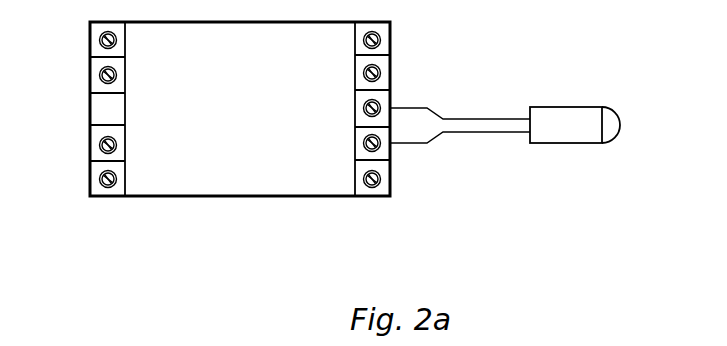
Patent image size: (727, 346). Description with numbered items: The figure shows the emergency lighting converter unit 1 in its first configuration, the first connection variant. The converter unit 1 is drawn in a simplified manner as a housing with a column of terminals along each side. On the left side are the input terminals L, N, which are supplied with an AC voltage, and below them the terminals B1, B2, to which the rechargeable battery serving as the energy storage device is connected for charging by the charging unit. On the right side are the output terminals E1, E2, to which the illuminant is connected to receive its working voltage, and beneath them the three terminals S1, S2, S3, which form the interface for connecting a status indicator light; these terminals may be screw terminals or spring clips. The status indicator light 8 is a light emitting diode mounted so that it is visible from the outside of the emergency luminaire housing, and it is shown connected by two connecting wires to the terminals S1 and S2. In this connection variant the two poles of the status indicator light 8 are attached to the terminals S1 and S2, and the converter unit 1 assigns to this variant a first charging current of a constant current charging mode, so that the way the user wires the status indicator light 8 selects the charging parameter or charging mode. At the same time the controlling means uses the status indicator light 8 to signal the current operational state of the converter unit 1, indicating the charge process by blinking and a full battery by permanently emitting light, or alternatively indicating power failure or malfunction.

The converter unit 1 is at (240, 197).
The input terminal L is at (90, 40).
The input terminal N is at (90, 76).
The terminal B1 is at (90, 143).
The terminal B2 is at (90, 180).
The output terminal E1 is at (390, 40).
The output terminal E2 is at (390, 70).
The terminal S1 is at (390, 97).
The terminal S2 is at (390, 133).
The terminal S3 is at (390, 181).
The status indicator light 8 is at (620, 118).